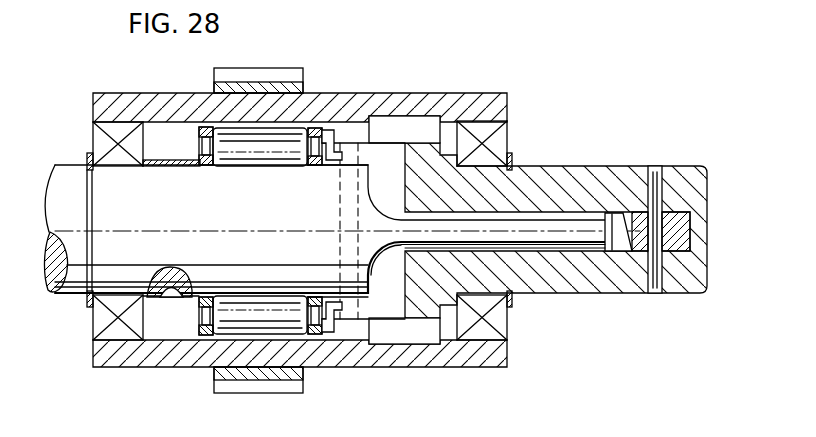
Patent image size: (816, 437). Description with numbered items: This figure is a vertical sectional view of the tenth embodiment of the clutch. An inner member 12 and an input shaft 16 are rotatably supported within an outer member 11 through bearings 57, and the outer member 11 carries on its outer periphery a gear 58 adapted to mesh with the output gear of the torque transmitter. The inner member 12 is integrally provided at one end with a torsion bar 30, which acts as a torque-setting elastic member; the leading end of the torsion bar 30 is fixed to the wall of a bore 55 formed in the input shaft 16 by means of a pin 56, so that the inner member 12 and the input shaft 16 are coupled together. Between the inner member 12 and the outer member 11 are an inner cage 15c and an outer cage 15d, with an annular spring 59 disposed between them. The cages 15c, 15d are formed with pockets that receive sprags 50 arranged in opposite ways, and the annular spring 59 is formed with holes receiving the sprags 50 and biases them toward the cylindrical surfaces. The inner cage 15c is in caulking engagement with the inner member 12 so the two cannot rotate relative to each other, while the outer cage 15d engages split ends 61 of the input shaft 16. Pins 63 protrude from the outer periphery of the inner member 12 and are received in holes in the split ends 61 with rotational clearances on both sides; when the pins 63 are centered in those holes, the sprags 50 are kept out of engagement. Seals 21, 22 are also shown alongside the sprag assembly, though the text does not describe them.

The outer member 11 is at (472, 98).
The inner member 12 is at (330, 256).
The inner cage 15c is at (198, 301).
The outer cage 15d is at (332, 132).
The input shaft 16 is at (540, 172).
The seal 21 is at (231, 163).
The seal 22 is at (217, 128).
The torsion bar 30 is at (540, 225).
The sprag 50 is at (292, 137).
The bore 55 is at (562, 246).
The pin 56 is at (652, 182).
The bearing 57 is at (108, 128).
The gear 58 is at (227, 388).
The annular spring 59 is at (198, 147).
The split end 61 is at (375, 150).
The pin 63 is at (360, 133).